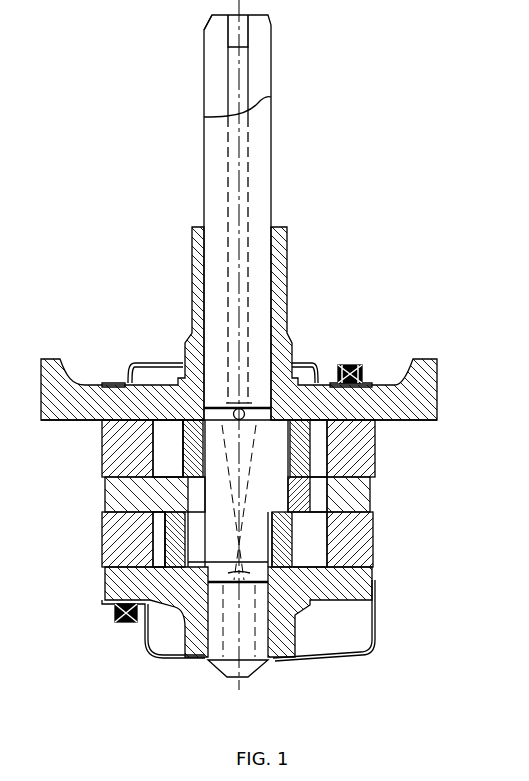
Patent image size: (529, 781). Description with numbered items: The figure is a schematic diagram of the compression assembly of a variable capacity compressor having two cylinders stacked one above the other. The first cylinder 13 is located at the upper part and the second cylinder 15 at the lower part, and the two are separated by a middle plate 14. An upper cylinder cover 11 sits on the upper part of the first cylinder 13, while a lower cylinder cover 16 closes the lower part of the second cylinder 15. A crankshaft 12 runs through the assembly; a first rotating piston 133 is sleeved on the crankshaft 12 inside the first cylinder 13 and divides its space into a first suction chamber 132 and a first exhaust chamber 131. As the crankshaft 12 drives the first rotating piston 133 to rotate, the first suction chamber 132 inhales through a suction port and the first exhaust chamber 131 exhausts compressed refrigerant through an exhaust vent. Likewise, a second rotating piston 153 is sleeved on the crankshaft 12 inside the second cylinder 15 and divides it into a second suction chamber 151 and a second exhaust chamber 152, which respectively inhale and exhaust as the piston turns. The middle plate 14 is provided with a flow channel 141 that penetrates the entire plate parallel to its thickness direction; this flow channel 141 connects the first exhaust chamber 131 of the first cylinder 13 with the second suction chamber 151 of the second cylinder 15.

The upper cylinder cover 11 is at (413, 378).
The crankshaft 12 is at (256, 185).
The first cylinder 13 is at (373, 473).
The first exhaust chamber 131 is at (317, 436).
The first suction chamber 132 is at (167, 431).
The first rotating piston 133 is at (190, 457).
The middle plate 14 is at (108, 490).
The flow channel 141 is at (312, 496).
The second cylinder 15 is at (373, 558).
The second suction chamber 151 is at (320, 531).
The second exhaust chamber 152 is at (158, 533).
The second rotating piston 153 is at (172, 555).
The lower cylinder cover 16 is at (375, 585).